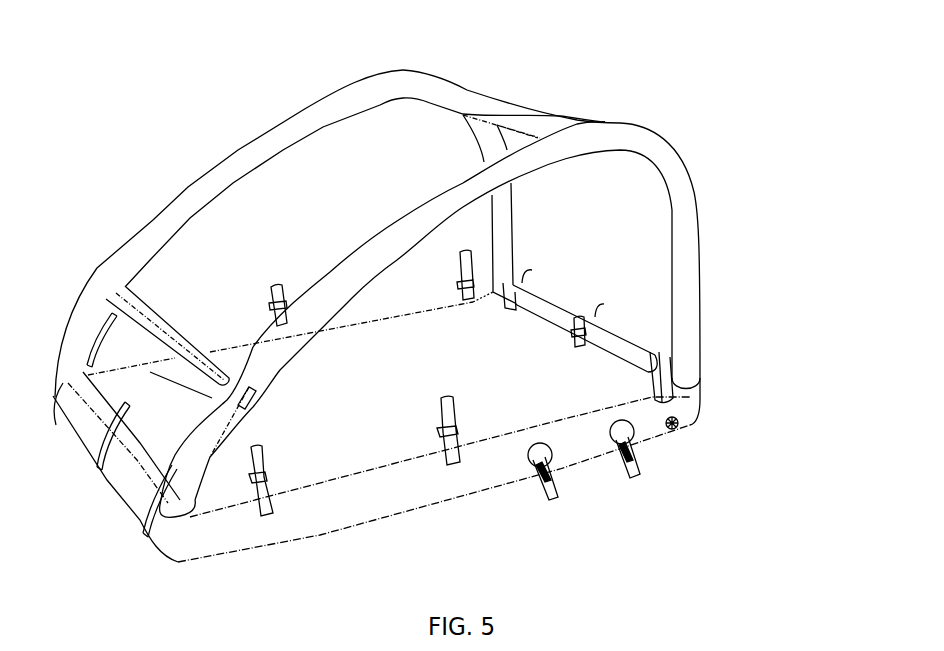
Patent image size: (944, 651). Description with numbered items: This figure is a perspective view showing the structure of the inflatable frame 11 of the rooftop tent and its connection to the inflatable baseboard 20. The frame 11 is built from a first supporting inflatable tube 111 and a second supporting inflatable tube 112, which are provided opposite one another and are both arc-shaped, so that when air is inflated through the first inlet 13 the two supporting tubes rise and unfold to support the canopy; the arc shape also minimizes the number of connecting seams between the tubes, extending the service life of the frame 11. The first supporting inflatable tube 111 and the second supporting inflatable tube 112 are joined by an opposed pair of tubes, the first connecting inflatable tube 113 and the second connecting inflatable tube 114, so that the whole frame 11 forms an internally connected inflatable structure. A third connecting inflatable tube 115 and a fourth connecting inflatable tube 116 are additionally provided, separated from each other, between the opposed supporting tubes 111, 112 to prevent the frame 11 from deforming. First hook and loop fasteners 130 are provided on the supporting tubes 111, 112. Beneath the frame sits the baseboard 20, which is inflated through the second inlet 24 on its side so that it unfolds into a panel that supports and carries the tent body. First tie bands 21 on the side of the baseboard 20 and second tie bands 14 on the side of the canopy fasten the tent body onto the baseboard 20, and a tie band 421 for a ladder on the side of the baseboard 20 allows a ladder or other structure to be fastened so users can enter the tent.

The frame 11 is at (251, 93).
The first supporting inflatable tube 111 is at (290, 133).
The second supporting inflatable tube 112 is at (613, 143).
The first connecting inflatable tube 113 is at (88, 395).
The second connecting inflatable tube 114 is at (600, 305).
The third connecting inflatable tube 115 is at (148, 336).
The fourth connecting inflatable tube 116 is at (467, 93).
The first inlet 13 is at (645, 348).
The second tie bands 14 is at (448, 463).
The baseboard 20 is at (365, 503).
The first tie bands 21 is at (135, 511).
The second inlet 24 is at (688, 425).
The first hook and loop fasteners 130 is at (210, 457).
The tie band for ladder 421 is at (637, 473).